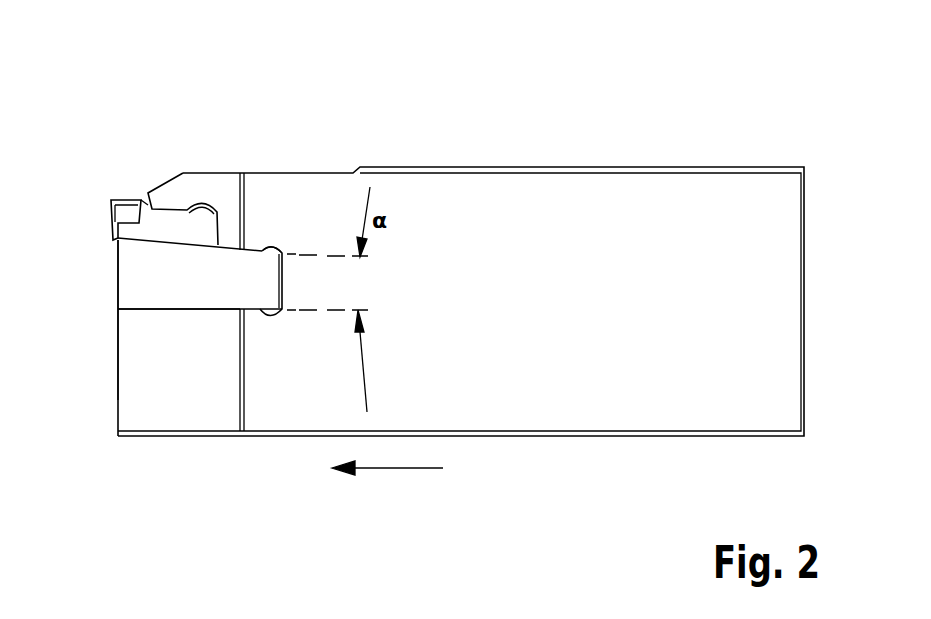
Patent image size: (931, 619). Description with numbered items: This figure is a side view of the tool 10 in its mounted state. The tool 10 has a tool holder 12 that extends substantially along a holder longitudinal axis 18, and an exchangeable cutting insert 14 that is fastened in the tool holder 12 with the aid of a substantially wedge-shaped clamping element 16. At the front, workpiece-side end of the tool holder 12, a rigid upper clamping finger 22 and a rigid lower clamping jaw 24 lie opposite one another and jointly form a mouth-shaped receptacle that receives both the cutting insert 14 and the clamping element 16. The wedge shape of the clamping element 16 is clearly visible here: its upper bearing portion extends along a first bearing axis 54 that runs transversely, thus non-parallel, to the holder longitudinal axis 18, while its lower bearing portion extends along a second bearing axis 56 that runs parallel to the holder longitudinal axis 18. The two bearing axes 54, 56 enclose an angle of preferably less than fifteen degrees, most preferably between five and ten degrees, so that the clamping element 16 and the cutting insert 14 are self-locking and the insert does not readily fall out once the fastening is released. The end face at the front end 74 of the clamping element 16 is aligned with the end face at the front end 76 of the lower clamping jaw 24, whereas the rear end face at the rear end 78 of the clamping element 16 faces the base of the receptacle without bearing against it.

The tool 10 is at (92, 125).
The tool holder 12 is at (520, 405).
The cutting insert 14 is at (123, 218).
The clamping element 16 is at (183, 300).
The holder longitudinal axis 18 is at (398, 470).
The upper clamping finger 22 is at (172, 195).
The lower clamping jaw 24 is at (137, 407).
The first bearing axis 54 is at (315, 253).
The second bearing axis 56 is at (313, 313).
The front end of the clamping wedge 74 is at (116, 282).
The front end of the lower clamping jaw 76 is at (116, 360).
The rear end of the clamping wedge 78 is at (283, 278).